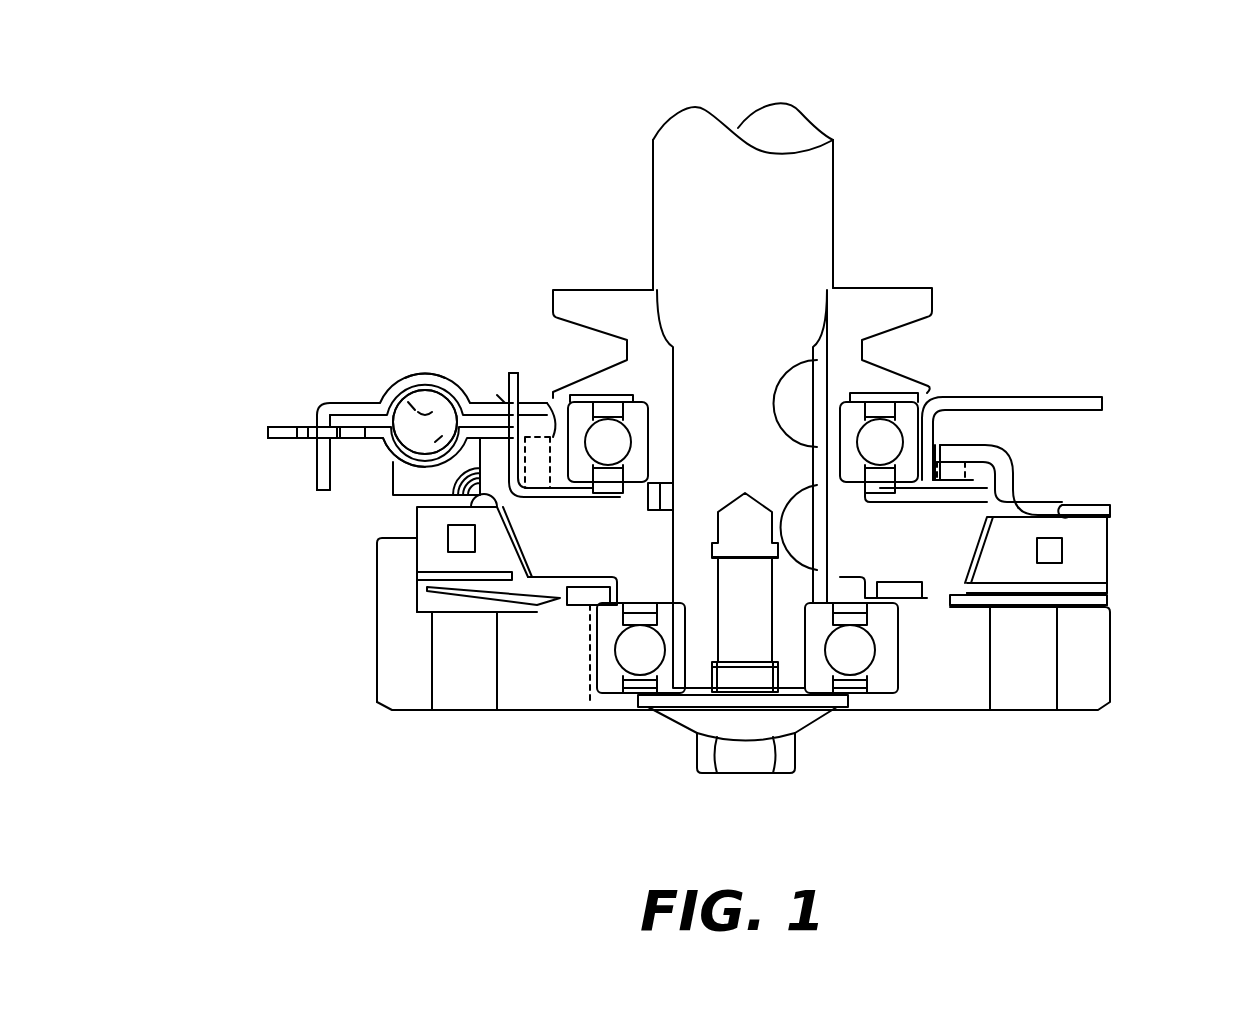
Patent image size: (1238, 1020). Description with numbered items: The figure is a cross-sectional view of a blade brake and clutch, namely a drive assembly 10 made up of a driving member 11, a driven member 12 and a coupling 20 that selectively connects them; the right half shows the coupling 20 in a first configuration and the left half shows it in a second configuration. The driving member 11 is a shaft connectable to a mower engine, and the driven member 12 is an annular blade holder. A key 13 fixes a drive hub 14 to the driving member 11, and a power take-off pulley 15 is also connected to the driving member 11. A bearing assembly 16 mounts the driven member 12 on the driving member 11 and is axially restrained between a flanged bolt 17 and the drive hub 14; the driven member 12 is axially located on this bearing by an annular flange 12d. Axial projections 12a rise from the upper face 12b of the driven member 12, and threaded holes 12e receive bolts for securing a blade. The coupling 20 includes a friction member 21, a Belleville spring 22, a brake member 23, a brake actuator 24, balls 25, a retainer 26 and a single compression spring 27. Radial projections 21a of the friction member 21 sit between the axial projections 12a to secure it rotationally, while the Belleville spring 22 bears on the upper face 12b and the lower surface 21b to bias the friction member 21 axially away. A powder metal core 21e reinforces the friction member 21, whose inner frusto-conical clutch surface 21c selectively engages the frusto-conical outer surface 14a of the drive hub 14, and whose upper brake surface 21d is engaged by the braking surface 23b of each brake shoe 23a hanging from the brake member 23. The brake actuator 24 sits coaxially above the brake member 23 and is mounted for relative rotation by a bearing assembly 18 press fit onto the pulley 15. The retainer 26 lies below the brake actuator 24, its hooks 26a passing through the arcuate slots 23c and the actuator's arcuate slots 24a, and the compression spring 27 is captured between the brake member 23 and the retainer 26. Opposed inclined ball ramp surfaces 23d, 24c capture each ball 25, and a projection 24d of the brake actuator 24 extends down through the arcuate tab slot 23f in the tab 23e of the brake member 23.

The drive assembly 10 is at (993, 132).
The driving member 11 is at (833, 205).
The driven member 12 is at (440, 710).
The projections 12a is at (383, 601).
The upper face 12b is at (463, 607).
The annular flange 12d is at (593, 597).
The threaded holes 12e is at (1033, 710).
The key 13 is at (797, 500).
The drive hub 14 is at (620, 554).
The frusto-conical outer surface 14a is at (1012, 500).
The power take-off pulley 15 is at (918, 288).
The bearing assembly 16 is at (610, 688).
The flanged bolt 17 is at (650, 707).
The bearing assembly 18 is at (927, 392).
The coupling 20 is at (327, 332).
The friction member 21 is at (417, 565).
The radial projections 21a is at (1108, 550).
The lower surface 21b is at (1097, 595).
The clutch surface 21c is at (968, 604).
The brake surface 21d is at (508, 508).
The powder metal core 21e is at (450, 533).
The Belleville spring 22 is at (440, 592).
The brake member 23 is at (280, 424).
The brake shoes 23a is at (393, 493).
The braking surface 23b is at (1070, 507).
The arcuate slots 23c is at (502, 395).
The ball ramp surfaces 23d is at (385, 448).
The tab 23e is at (268, 433).
The arcuate tab slot 23f is at (305, 427).
The brake actuator 24 is at (343, 405).
The arcuate slots 24a is at (527, 390).
The ball ramp surfaces 24c is at (433, 377).
The projection 24d is at (318, 486).
The balls 25 is at (412, 392).
The retainer 26 is at (493, 404).
The hooks 26a is at (513, 373).
The compression spring 27 is at (556, 395).